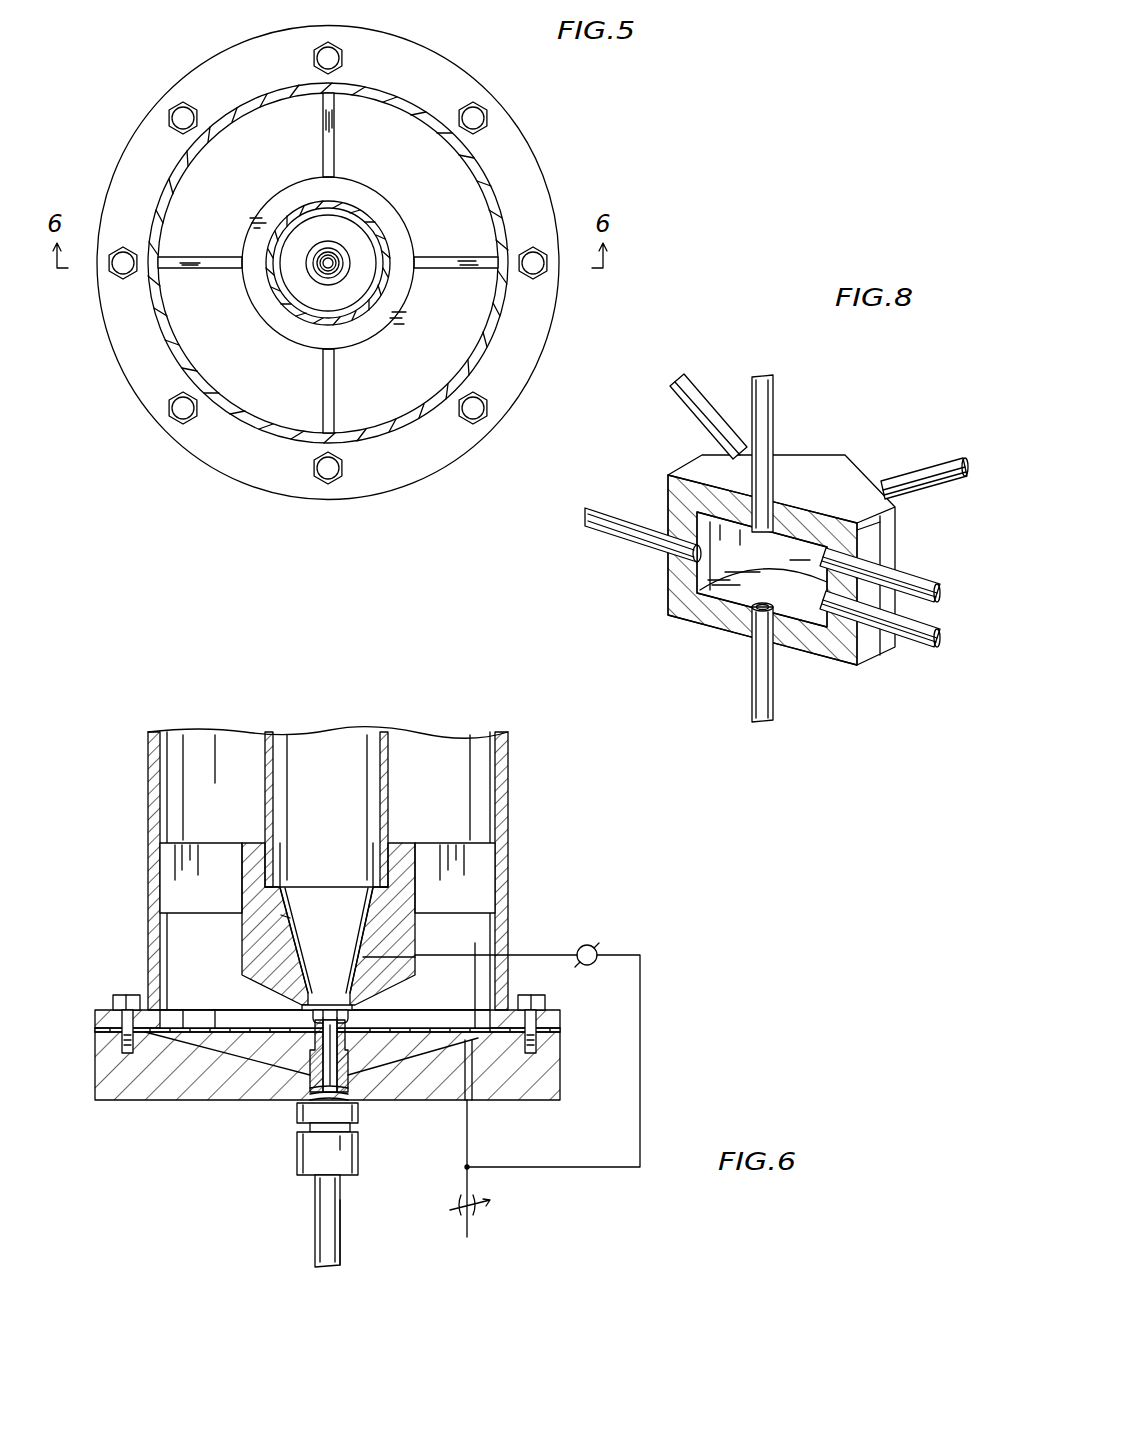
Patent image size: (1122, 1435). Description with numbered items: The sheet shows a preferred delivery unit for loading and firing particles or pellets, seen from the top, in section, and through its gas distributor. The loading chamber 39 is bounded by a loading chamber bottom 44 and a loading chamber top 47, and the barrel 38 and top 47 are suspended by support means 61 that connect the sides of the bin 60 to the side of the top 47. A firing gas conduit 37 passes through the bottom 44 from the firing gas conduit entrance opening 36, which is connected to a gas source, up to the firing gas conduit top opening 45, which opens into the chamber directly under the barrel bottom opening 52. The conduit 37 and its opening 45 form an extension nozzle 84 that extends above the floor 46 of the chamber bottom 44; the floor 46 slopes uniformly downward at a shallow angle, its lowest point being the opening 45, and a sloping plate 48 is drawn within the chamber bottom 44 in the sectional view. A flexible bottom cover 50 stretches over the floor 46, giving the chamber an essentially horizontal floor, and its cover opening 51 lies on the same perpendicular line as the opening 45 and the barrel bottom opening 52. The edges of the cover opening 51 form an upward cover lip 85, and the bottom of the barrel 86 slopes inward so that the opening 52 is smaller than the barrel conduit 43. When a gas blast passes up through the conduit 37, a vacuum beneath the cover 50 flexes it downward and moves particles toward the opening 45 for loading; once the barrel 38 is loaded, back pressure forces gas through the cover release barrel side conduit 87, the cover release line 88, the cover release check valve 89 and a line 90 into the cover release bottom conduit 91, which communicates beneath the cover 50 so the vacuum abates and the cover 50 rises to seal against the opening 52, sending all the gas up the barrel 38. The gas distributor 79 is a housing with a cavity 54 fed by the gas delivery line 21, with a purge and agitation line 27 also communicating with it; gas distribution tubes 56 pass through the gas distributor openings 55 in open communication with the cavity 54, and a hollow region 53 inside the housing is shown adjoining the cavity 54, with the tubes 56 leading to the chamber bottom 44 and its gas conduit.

In FIG. 8, the gas delivery line 21 is at (775, 700).
In FIG. 6, the gas delivery line 21 is at (340, 1245).
In FIG. 8, the purge and agitation line 27 is at (920, 640).
In FIG. 6, the firing gas conduit entrance opening 36 is at (333, 1180).
In FIG. 6, the firing gas conduit 37 is at (333, 1077).
In FIG. 5, the barrel 38 is at (385, 305).
In FIG. 6, the barrel 38 is at (393, 745).
In FIG. 6, the loading chamber 39 is at (365, 1022).
In FIG. 5, the barrel conduit 43 is at (310, 222).
In FIG. 5, the loading chamber bottom 44 is at (545, 352).
In FIG. 6, the loading chamber bottom 44 is at (560, 1067).
In FIG. 5, the firing gas conduit top opening 45 is at (328, 270).
In FIG. 6, the firing gas conduit top opening 45 is at (348, 1024).
In FIG. 6, the floor 46 is at (403, 1053).
In FIG. 5, the loading chamber top 47 is at (403, 214).
In FIG. 6, the loading chamber top 47 is at (420, 882).
In FIG. 6, the conical plate 48 is at (255, 993).
In FIG. 5, the flexible bottom cover 50 is at (430, 168).
In FIG. 6, the flexible bottom cover 50 is at (200, 1022).
In FIG. 5, the cover opening 51 is at (346, 265).
In FIG. 6, the cover opening 51 is at (310, 1022).
In FIG. 6, the barrel bottom opening 52 is at (300, 1020).
In FIG. 8, the cavity 53 is at (832, 532).
In FIG. 8, the gas distributor cavity 54 is at (718, 590).
In FIG. 8, the gas distributor openings 55 is at (897, 542).
In FIG. 8, the gas distribution tubes 56 is at (680, 400).
In FIG. 6, the bin 60 is at (205, 755).
In FIG. 5, the support means 61 is at (336, 130).
In FIG. 6, the support means 61 is at (205, 860).
In FIG. 8, the gas distributor 79 is at (824, 455).
In FIG. 6, the extension nozzle 84 is at (330, 1077).
In FIG. 6, the cover lip 85 is at (335, 1000).
In FIG. 6, the bottom of the barrel 86 is at (290, 916).
In FIG. 6, the cover release barrel side conduit 87 is at (395, 947).
In FIG. 6, the cover release line 88 is at (535, 955).
In FIG. 6, the cover release check valve 89 is at (597, 948).
In FIG. 6, the line 90 is at (572, 1167).
In FIG. 6, the cover release bottom conduit 91 is at (472, 1080).